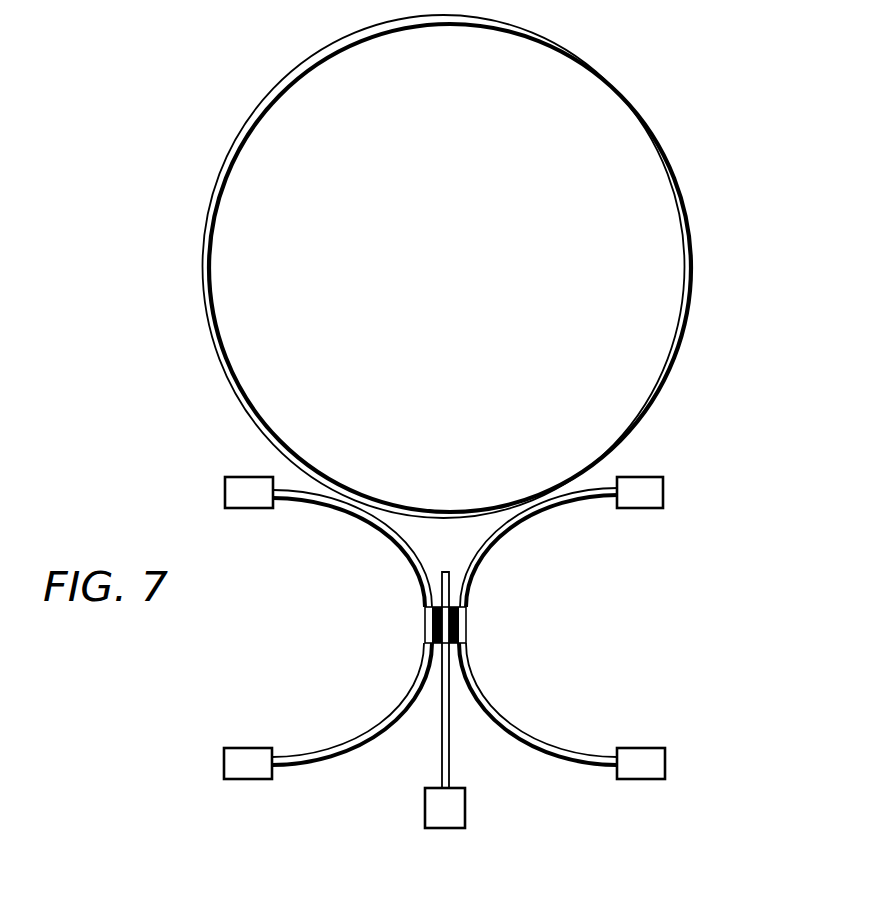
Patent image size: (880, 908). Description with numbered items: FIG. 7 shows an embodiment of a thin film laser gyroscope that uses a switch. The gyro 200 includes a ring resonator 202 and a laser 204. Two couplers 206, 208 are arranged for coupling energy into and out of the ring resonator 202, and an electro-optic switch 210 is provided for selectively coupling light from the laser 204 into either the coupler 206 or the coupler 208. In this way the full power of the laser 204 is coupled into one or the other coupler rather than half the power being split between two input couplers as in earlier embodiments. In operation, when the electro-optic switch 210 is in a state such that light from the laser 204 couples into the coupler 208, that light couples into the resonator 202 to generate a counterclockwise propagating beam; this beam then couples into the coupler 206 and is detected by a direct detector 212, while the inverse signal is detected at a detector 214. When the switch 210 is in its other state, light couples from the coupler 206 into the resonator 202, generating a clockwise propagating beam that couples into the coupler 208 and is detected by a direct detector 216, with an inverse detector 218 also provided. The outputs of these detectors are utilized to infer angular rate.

The gyro 200 is at (218, 440).
The ring resonator 202 is at (202, 242).
The laser 204 is at (425, 813).
The coupler 206 is at (392, 711).
The coupler 208 is at (527, 519).
The electro-optic switch 210 is at (425, 622).
The direct detector 212 is at (250, 781).
The detector 214 is at (663, 500).
The direct detector 216 is at (641, 747).
The inverse detector 218 is at (240, 509).